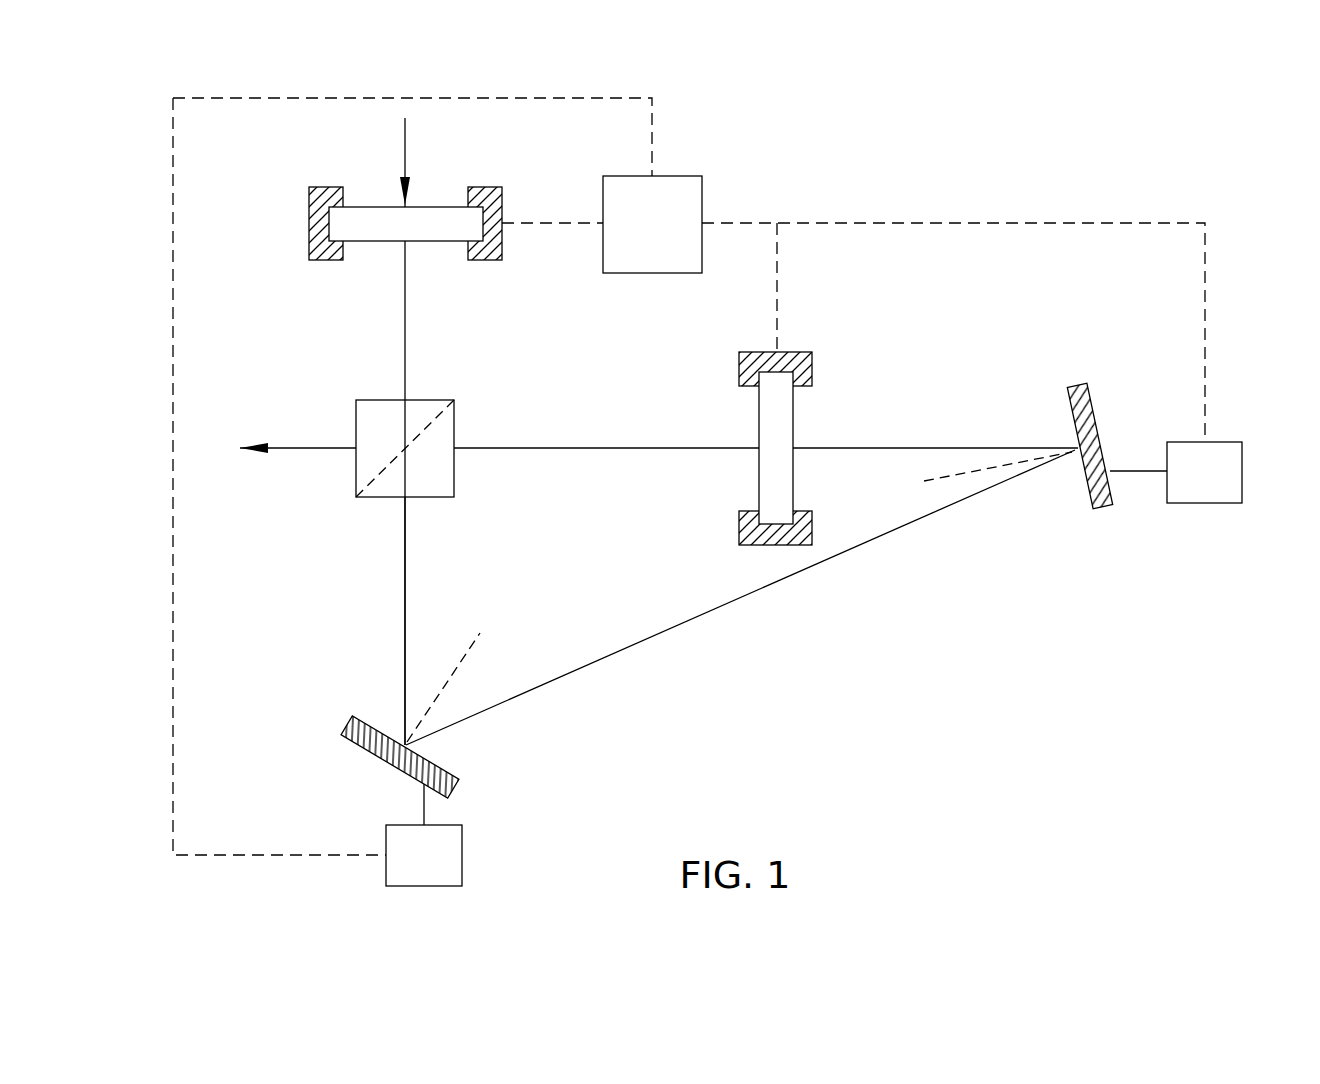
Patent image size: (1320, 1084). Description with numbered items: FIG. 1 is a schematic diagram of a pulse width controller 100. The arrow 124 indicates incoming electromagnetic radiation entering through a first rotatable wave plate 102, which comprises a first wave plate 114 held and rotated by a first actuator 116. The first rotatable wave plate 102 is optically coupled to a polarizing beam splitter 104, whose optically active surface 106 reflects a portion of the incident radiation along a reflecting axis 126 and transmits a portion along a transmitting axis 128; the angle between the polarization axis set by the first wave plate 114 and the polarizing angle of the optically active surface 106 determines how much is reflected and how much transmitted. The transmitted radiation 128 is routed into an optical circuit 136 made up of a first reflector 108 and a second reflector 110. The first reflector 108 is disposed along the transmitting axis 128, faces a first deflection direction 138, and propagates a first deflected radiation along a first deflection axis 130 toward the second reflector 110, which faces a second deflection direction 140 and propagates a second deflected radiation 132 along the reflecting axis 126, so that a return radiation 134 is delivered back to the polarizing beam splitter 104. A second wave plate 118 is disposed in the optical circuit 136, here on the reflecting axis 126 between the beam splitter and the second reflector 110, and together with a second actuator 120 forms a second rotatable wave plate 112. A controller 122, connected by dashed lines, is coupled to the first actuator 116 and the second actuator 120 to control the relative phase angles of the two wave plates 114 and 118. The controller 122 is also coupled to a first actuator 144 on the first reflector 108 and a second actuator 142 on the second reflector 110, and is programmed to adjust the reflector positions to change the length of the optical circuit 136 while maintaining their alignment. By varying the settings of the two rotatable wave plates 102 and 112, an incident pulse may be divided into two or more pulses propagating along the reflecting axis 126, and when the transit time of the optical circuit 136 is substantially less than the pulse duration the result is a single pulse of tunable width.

The pulse width controller 100 is at (828, 135).
The first rotatable wave plate 102 is at (386, 194).
The polarizing beam splitter 104 is at (386, 440).
The optically active surface 106 is at (425, 428).
The first reflector 108 is at (398, 770).
The second reflector 110 is at (1098, 418).
The second rotatable wave plate 112 is at (772, 421).
The first wave plate 114 is at (364, 206).
The first actuator 116 is at (309, 220).
The second wave plate 118 is at (759, 480).
The second actuator 120 is at (739, 368).
The controller 122 is at (675, 176).
The input beam 124 is at (406, 137).
The reflecting axis 126 is at (272, 452).
The transmitting axis 128 is at (407, 597).
The first deflection axis 130 is at (597, 668).
The second deflected radiation 132 is at (963, 448).
The return radiation 134 is at (597, 448).
The optical circuit 136 is at (797, 612).
The first deflection direction 138 is at (468, 655).
The second deflection direction 140 is at (948, 478).
The second actuator 142 is at (1176, 472).
The first actuator 144 is at (424, 835).